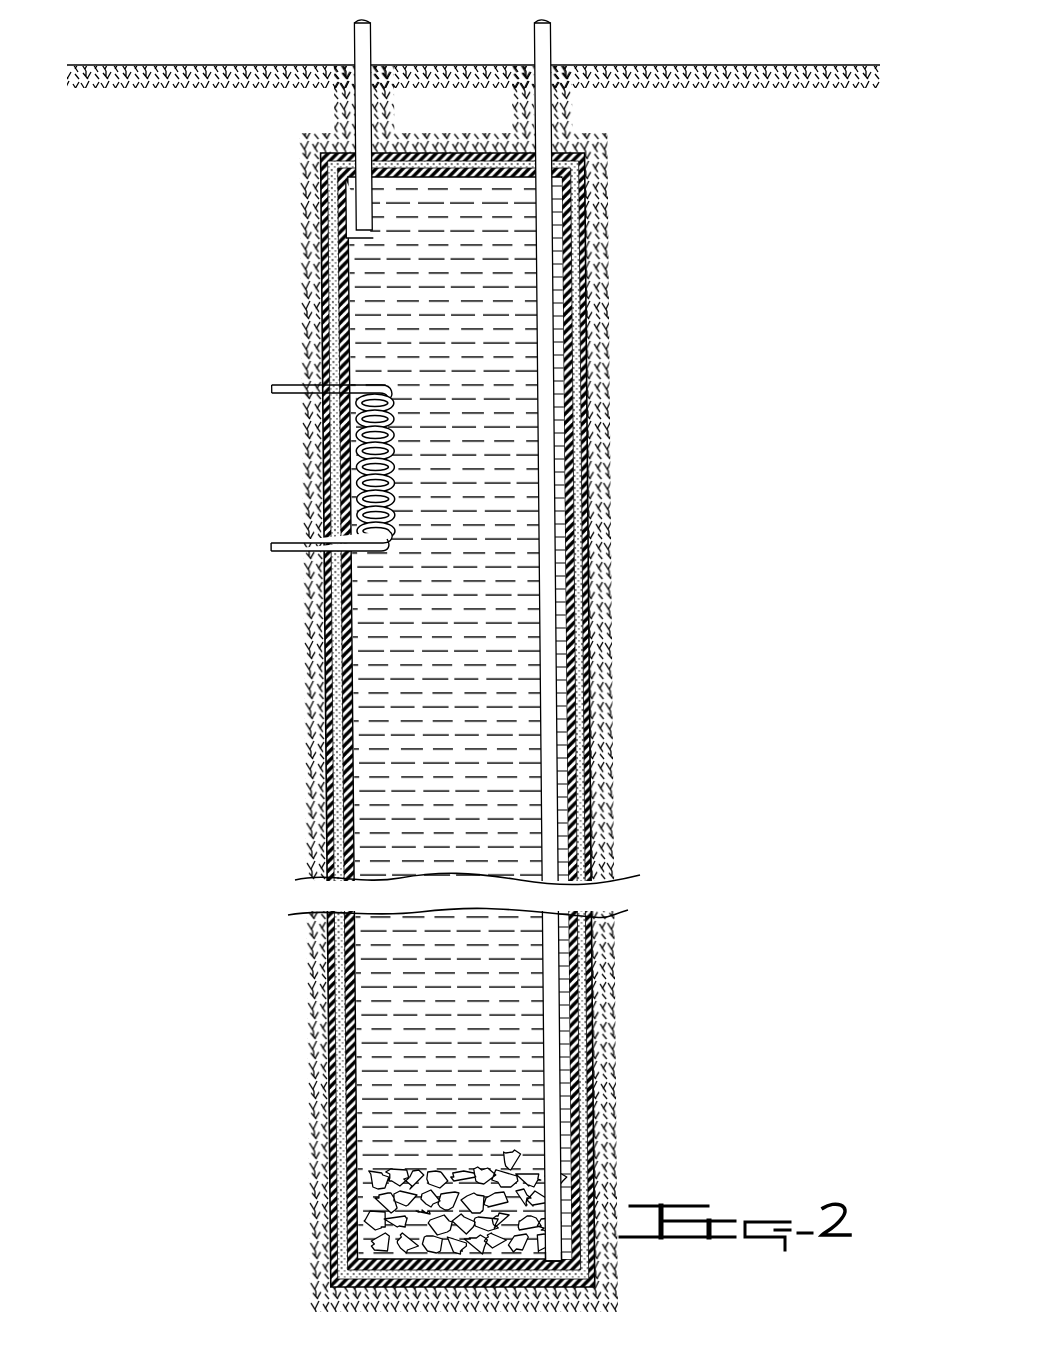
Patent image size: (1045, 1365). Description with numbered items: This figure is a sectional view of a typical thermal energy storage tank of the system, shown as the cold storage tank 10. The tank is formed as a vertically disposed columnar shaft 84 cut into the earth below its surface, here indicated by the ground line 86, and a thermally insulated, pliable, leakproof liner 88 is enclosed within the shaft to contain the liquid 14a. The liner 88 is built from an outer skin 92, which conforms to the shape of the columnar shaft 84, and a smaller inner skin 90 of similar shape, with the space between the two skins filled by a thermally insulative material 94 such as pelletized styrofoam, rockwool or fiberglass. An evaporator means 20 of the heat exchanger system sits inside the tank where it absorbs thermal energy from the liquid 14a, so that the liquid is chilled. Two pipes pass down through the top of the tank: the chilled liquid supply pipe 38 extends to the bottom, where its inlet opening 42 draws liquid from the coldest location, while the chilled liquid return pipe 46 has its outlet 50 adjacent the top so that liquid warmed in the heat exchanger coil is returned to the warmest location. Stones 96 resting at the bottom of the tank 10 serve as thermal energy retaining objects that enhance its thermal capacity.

The cold storage tank 10 is at (458, 653).
The liquid 14a is at (454, 718).
The evaporator means 20 is at (332, 468).
The chilled liquid supply pipe 38 is at (547, 640).
The inlet opening 42 is at (553, 1256).
The chilled liquid return pipe 46 is at (363, 125).
The outlet 50 is at (360, 209).
The columnar shaft 84 is at (458, 720).
The ground surface 86 is at (276, 40).
The liner 88 is at (460, 718).
The inner skin 90 is at (458, 720).
The outer skin 92 is at (458, 720).
The thermally insulative material 94 is at (459, 719).
The stones 96 is at (466, 1202).